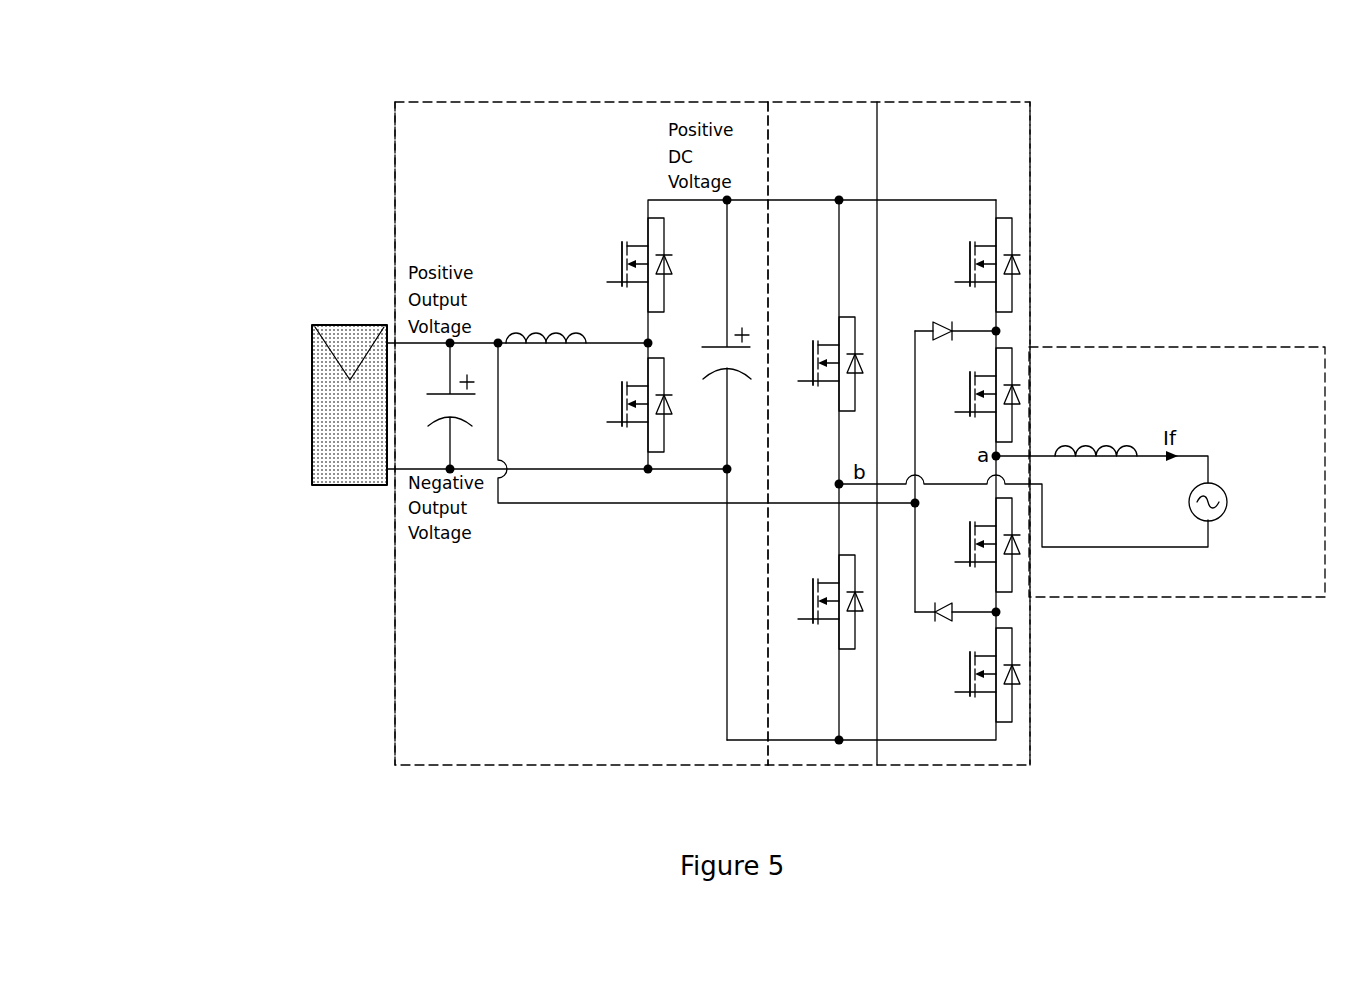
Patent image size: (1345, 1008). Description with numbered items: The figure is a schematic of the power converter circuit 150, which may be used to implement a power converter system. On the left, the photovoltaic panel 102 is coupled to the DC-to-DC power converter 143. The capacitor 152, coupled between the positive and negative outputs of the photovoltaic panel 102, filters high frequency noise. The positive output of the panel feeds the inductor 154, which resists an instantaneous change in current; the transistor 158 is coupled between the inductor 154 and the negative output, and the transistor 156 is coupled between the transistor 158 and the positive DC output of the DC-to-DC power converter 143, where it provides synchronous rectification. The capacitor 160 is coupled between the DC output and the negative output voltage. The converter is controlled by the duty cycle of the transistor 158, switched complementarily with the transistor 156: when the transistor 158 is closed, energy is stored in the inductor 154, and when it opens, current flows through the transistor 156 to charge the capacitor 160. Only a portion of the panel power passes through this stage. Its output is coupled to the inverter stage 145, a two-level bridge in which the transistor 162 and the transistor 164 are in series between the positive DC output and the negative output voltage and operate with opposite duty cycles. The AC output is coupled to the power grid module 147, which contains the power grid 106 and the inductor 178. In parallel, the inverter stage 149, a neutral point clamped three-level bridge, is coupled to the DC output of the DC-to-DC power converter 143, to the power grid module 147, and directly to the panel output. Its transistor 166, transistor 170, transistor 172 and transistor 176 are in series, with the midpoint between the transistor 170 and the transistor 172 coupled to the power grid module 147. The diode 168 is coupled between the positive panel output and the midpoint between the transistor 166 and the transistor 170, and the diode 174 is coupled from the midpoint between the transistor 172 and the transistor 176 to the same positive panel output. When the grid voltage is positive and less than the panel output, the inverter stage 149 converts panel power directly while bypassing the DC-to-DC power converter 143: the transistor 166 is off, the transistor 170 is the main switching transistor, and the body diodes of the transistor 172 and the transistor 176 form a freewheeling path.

The power converter circuit 150 is at (300, 143).
The photovoltaic panel 102 is at (312, 410).
The DC-to-DC power converter 143 is at (563, 140).
The inverter stage 145 is at (813, 140).
The inverter stage 149 is at (936, 138).
The power grid module 147 is at (1254, 398).
The capacitor 152 is at (478, 400).
The inductor 154 is at (572, 328).
The transistor 156 is at (634, 230).
The transistor 158 is at (628, 428).
The capacitor 160 is at (715, 382).
The transistor 162 is at (825, 390).
The transistor 164 is at (823, 628).
The transistor 166 is at (986, 237).
The diode 168 is at (924, 318).
The transistor 170 is at (985, 420).
The transistor 172 is at (1018, 570).
The diode 174 is at (928, 620).
The transistor 176 is at (1018, 653).
The inductor 178 is at (1102, 457).
The power grid 106 is at (1215, 480).